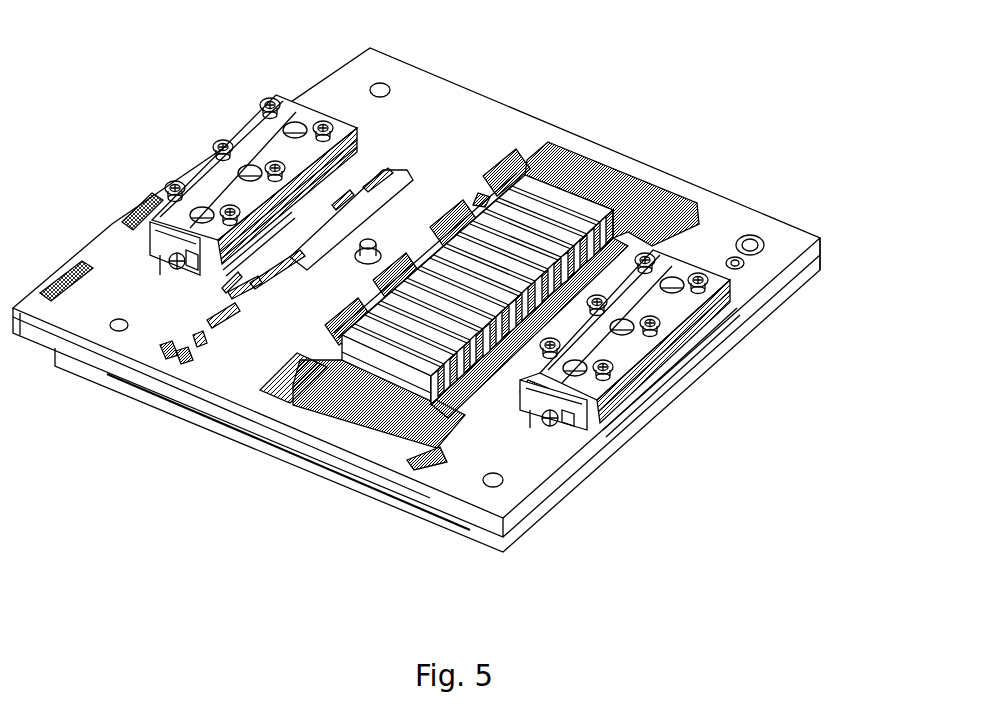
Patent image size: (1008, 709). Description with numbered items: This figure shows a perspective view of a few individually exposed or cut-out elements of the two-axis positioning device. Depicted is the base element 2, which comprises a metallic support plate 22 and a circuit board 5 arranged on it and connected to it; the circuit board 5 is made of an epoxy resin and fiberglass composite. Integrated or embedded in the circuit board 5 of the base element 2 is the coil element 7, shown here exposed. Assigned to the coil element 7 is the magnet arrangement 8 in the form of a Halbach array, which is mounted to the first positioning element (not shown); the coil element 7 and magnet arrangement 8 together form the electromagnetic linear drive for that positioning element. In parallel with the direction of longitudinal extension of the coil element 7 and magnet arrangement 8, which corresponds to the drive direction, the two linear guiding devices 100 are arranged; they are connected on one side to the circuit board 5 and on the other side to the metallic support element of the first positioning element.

The base element 2 is at (830, 251).
The circuit board 5 is at (153, 378).
The coil element 7 is at (343, 408).
The magnet arrangement 8 is at (557, 205).
The metallic support plate 22 is at (563, 492).
The linear guiding devices 100 is at (200, 131).